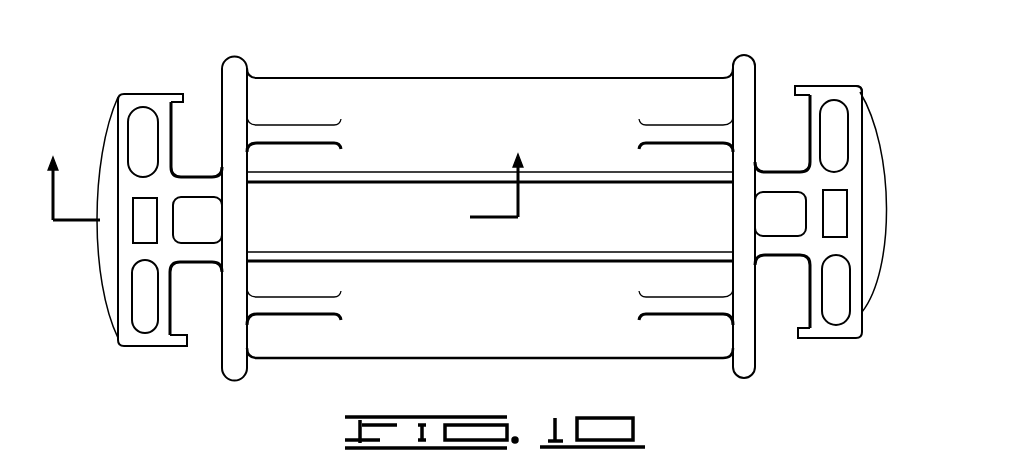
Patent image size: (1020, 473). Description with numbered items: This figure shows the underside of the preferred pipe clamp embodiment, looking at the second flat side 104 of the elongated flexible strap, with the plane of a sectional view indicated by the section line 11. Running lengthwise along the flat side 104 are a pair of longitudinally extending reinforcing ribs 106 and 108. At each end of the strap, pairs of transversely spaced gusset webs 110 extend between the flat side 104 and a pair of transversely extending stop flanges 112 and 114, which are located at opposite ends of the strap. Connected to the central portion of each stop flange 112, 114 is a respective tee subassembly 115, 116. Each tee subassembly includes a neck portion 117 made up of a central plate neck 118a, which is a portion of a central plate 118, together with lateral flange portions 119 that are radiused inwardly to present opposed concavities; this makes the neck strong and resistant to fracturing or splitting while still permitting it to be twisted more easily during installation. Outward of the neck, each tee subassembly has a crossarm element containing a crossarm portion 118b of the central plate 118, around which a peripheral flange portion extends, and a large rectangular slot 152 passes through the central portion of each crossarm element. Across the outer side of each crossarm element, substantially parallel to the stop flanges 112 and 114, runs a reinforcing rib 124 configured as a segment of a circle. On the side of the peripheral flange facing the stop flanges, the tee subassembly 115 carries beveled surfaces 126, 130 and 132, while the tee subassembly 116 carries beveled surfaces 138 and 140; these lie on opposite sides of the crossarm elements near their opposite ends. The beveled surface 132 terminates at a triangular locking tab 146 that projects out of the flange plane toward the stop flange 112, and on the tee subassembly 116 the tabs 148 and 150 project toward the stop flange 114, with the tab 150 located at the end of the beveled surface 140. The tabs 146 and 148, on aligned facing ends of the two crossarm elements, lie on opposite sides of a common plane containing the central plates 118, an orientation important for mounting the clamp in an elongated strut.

The section line 11- 11 is at (286, 178).
The second flat side 104 is at (508, 300).
The reinforcing rib 106 is at (357, 175).
The reinforcing rib 108 is at (325, 256).
The gusset webs 110 is at (287, 127).
The stop flange 112 is at (232, 62).
The stop flange 114 is at (738, 53).
The tee subassembly 115 is at (117, 362).
The tee subassembly 116 is at (876, 318).
The neck portion 117 is at (773, 259).
The central plate 118 is at (143, 315).
The central plate neck 118a is at (210, 222).
The crossarm portion 118b is at (138, 128).
The lateral flange portions 119 is at (193, 251).
The reinforcing rib 124 is at (105, 275).
The beveled surface 126 is at (855, 90).
The beveled surface 130 is at (171, 308).
The beveled surface 132 is at (171, 125).
The beveled surface 138 is at (810, 130).
The beveled surface 140 is at (810, 308).
The locking tab 146 is at (180, 93).
The locking tab 148 is at (798, 86).
The locking tab 150 is at (800, 338).
The rectangular slot 152 is at (143, 232).